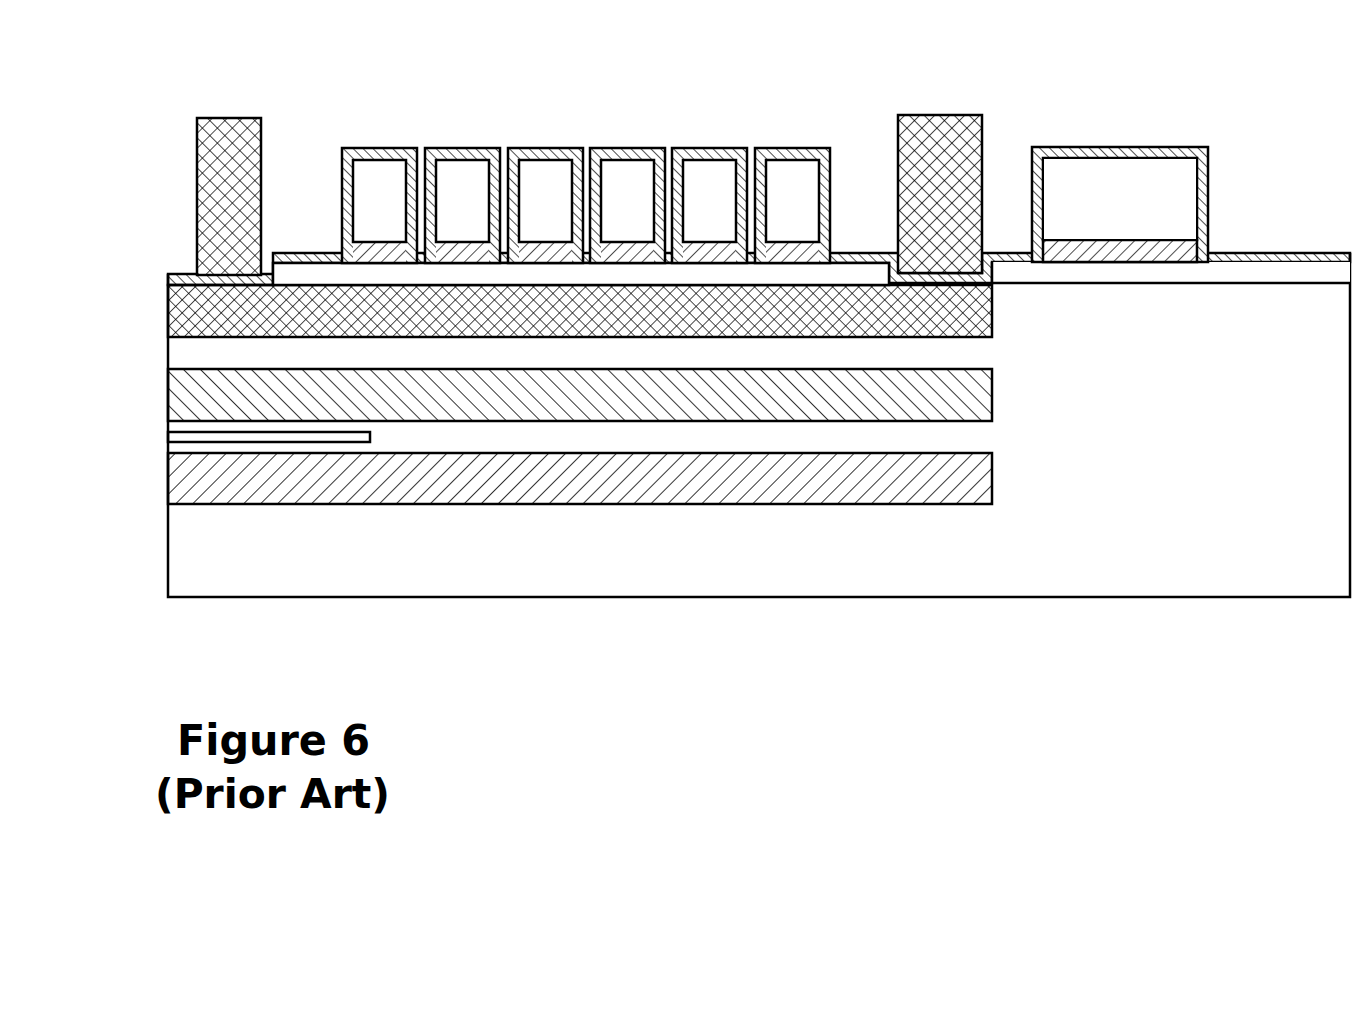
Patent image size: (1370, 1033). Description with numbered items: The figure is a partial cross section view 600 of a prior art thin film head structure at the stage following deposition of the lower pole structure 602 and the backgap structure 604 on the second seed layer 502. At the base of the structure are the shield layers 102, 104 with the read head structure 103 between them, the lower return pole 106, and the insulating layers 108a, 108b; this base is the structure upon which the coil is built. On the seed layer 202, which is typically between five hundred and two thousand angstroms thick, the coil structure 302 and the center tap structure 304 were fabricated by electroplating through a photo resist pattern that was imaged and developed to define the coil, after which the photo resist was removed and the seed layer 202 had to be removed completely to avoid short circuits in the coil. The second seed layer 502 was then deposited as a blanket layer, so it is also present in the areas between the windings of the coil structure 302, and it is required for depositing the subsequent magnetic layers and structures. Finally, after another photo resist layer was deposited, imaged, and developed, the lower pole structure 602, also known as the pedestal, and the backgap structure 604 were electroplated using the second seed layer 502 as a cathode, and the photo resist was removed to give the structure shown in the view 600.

The partial cross section view 600 is at (1198, 647).
The lower pole structure 602 is at (227, 118).
The backgap structure 604 is at (938, 115).
The coil structure 302 is at (625, 202).
The second seed layer 502 is at (1095, 147).
The center tap structure 304 is at (1094, 216).
The seed layer 202 is at (1122, 252).
The insulating layer 108a is at (1170, 272).
The insulating layer 108b is at (580, 273).
The lower return pole 106 is at (422, 326).
The shield layer 104 is at (443, 409).
The read head structure 103 is at (268, 443).
The shield layer 102 is at (453, 492).